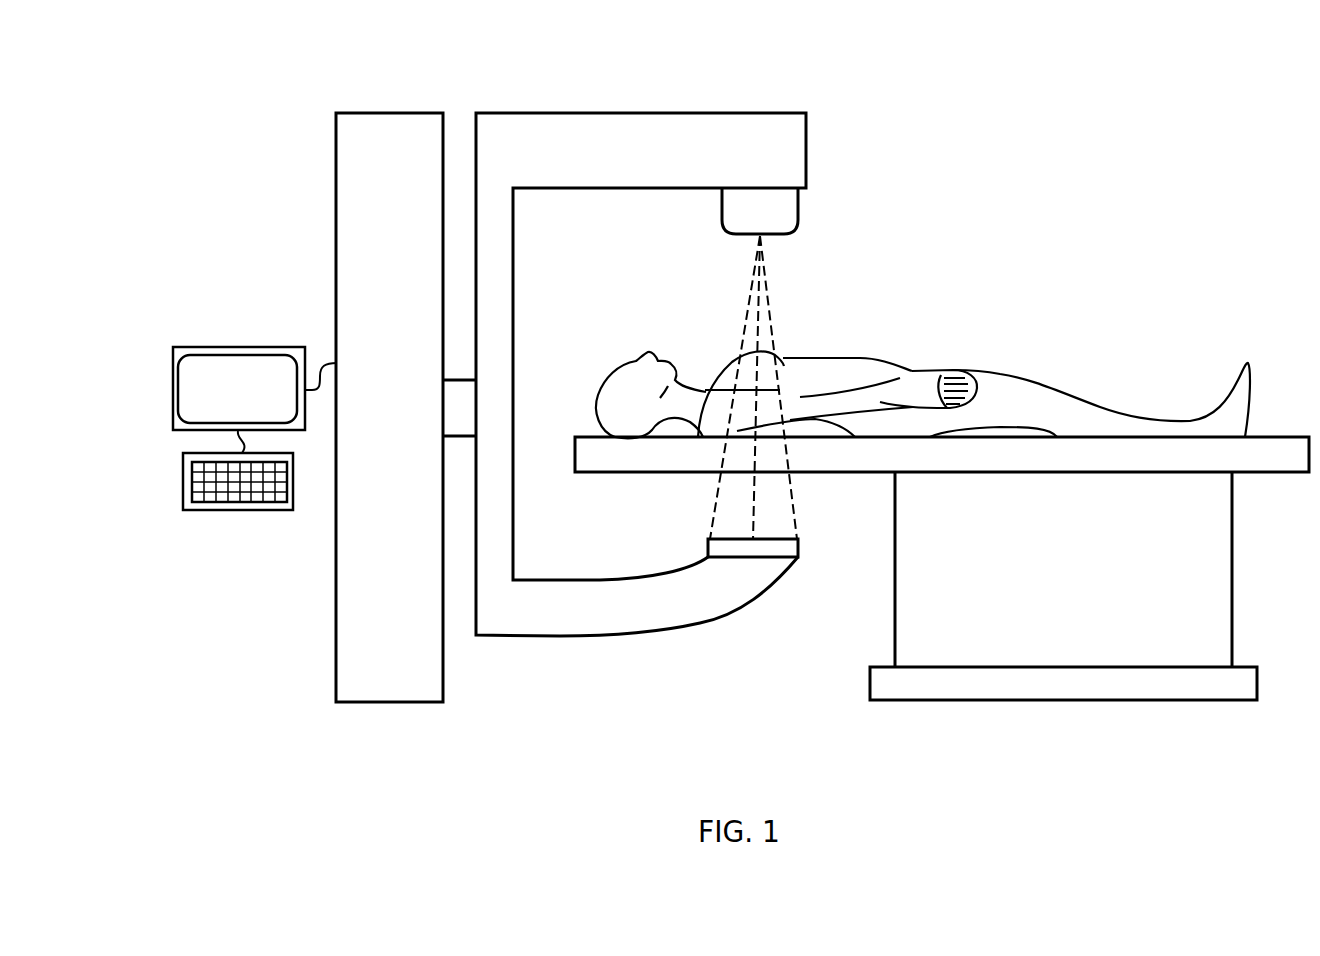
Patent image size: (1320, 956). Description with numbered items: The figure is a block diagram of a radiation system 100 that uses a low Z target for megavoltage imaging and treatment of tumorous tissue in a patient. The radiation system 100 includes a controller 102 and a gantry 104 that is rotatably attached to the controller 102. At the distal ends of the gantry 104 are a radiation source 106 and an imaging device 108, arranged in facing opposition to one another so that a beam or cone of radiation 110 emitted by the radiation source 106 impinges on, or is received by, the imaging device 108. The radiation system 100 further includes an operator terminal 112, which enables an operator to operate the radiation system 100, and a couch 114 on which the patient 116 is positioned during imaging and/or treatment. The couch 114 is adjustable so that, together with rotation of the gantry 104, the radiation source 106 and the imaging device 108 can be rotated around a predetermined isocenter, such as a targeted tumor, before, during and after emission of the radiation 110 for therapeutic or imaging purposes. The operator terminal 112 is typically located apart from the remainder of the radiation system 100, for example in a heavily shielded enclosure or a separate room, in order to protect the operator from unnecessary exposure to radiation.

The radiation system 100 is at (290, 99).
The controller 102 is at (405, 378).
The gantry 104 is at (513, 372).
The radiation source 106 is at (818, 122).
The imaging device 108 is at (788, 582).
The radiation 110 is at (773, 338).
The operator terminal 112 is at (253, 398).
The couch 114 is at (1082, 578).
The patient 116 is at (847, 385).